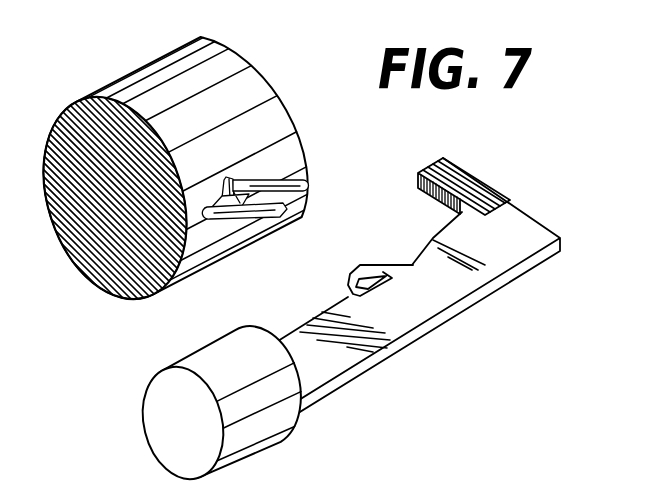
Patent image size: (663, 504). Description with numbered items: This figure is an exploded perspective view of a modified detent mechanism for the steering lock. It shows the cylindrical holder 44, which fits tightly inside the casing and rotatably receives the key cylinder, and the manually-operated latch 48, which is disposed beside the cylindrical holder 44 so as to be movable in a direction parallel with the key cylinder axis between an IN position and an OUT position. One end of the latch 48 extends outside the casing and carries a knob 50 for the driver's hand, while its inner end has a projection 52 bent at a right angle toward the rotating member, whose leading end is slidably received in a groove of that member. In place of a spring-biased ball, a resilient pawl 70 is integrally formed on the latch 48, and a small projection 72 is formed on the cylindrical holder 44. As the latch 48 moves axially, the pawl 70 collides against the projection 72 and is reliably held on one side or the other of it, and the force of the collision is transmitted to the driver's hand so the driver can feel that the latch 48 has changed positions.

The cylindrical holder 44 is at (137, 82).
The manually-operated latch 48 is at (503, 252).
The knob 50 is at (257, 428).
The projection 52 is at (458, 180).
The resilient pawl 70 is at (373, 265).
The small projection 72 is at (235, 183).